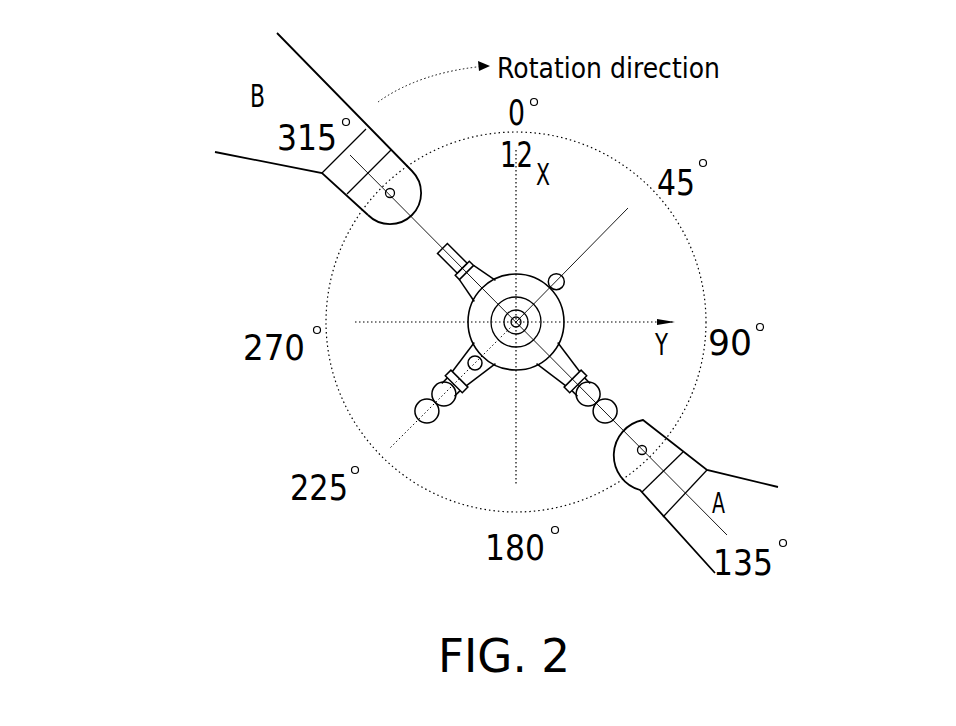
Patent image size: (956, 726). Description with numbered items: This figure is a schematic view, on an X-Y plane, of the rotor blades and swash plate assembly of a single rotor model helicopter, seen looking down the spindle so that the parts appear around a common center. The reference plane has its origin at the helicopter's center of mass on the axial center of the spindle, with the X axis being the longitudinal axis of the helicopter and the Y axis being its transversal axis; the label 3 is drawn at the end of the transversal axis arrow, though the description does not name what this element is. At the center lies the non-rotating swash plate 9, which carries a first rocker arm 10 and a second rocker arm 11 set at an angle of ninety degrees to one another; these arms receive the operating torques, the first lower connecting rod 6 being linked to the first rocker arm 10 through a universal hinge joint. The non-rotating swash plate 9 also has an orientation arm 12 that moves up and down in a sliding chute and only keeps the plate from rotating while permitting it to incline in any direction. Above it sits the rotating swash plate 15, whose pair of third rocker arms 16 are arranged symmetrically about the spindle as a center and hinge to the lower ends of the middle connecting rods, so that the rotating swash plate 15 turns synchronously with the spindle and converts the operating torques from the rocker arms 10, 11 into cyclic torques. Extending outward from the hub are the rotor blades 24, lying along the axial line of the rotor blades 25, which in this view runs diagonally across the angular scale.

The Y axis 3 is at (526, 310).
The first lower connecting rod 6 is at (516, 335).
The non-rotating swash plate 9 is at (516, 322).
The first rocker arm of the non-rotating swash plate 10 is at (335, 348).
The second rocker arm of the non-rotating swash plate 11 is at (285, 432).
The orientation arm of the non-rotating swash plate 12 is at (455, 278).
The rotating swash plate 15 is at (482, 312).
The third rocker arm 16 is at (455, 361).
The rotor blade 24 is at (247, 130).
The axial line of the rotor blades 25 is at (360, 222).